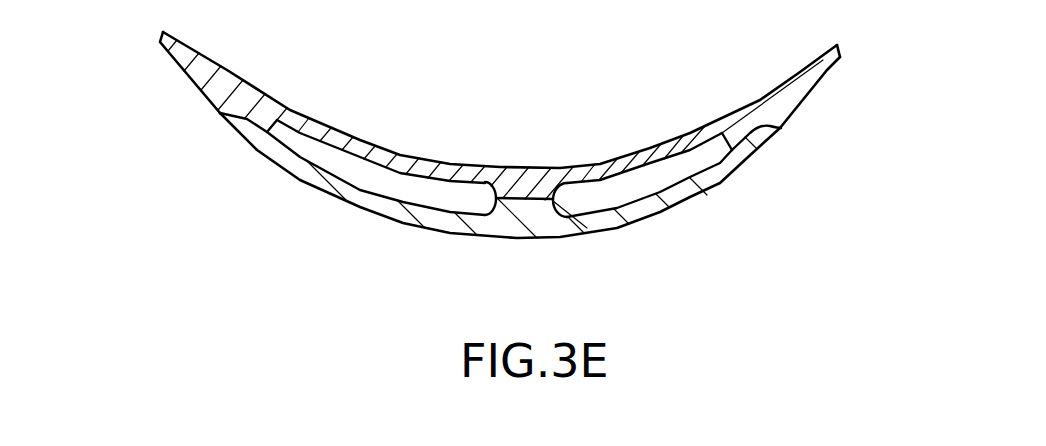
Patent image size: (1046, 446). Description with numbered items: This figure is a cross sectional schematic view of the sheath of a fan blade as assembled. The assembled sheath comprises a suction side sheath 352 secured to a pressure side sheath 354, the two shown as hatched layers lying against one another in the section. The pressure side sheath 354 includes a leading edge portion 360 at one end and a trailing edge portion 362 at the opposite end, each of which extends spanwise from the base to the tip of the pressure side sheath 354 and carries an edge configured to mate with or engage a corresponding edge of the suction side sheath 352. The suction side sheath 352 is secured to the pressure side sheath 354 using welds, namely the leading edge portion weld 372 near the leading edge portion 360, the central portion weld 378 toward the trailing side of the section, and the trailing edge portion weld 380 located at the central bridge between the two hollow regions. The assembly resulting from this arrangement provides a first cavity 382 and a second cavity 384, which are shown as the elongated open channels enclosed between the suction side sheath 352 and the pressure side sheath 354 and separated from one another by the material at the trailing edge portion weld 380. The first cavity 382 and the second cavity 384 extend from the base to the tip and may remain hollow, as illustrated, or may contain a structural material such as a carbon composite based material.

The suction side sheath 352 is at (617, 228).
The pressure side sheath 354 is at (530, 168).
The leading edge portion 360 is at (195, 63).
The trailing edge portion 362 is at (812, 82).
The leading edge portion weld 372 is at (225, 113).
The central portion weld 378 is at (783, 128).
The trailing edge portion weld 380 is at (503, 238).
The first cavity 382 is at (367, 180).
The second cavity 384 is at (660, 177).